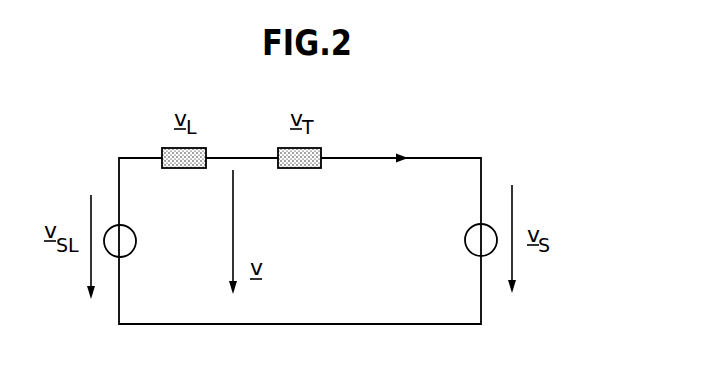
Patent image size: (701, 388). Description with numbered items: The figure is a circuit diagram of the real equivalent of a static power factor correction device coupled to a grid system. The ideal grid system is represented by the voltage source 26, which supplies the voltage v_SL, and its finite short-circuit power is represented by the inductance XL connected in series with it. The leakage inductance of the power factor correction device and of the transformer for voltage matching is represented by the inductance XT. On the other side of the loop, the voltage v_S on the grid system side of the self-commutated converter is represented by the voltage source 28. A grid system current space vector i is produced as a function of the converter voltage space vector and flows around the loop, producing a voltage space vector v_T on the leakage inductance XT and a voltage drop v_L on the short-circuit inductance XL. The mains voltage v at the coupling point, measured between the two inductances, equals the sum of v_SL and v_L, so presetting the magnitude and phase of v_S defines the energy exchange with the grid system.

The voltage source 26 is at (137, 239).
The voltage source 28 is at (465, 237).
The inductance XL is at (184, 179).
The inductance XT is at (299, 177).
The grid system current space vector i is at (398, 126).